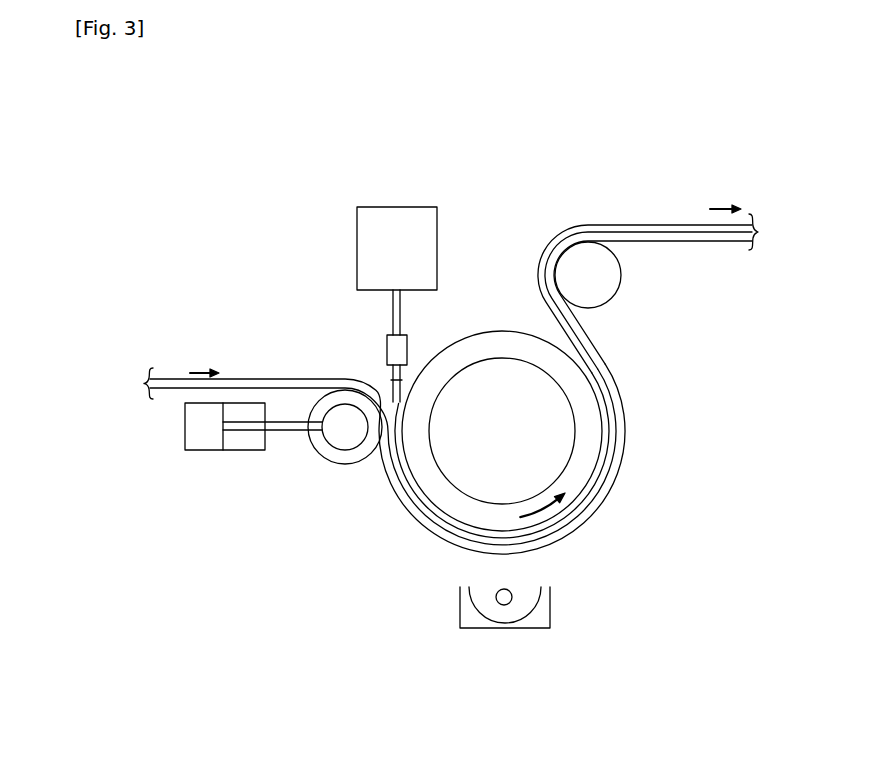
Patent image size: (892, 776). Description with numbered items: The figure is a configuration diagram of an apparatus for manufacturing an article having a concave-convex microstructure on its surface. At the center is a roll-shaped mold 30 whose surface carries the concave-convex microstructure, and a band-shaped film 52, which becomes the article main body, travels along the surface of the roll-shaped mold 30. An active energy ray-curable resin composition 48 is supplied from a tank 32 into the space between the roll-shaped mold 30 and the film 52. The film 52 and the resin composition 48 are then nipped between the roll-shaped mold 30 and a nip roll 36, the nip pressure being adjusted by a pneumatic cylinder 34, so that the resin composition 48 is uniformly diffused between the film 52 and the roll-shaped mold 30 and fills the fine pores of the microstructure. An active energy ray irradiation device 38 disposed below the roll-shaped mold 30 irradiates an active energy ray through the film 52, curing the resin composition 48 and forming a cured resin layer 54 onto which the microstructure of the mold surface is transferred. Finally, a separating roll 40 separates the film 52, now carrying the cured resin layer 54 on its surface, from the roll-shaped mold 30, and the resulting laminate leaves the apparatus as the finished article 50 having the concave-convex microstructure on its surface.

The roll-shaped mold 30 is at (497, 328).
The tank 32 is at (350, 247).
The pneumatic cylinder 34 is at (237, 452).
The nip roll 36 is at (342, 465).
The active energy ray irradiation device 38 is at (555, 607).
The separating roll 40 is at (622, 278).
The active energy ray-curable resin composition 48 is at (383, 375).
The article 50 is at (685, 160).
The band-shaped film 52 is at (272, 377).
The cured resin layer 54 is at (633, 223).